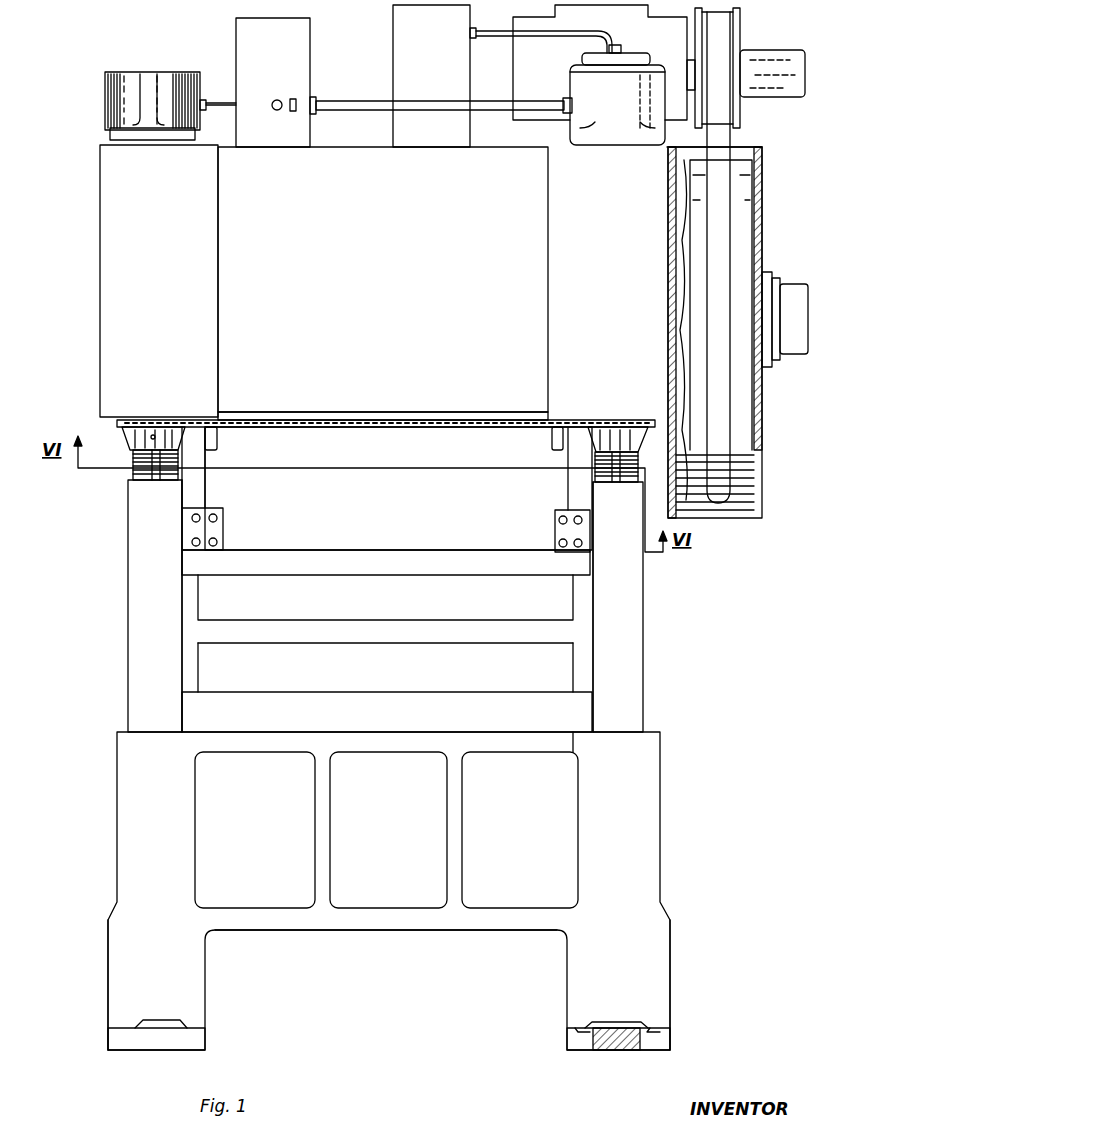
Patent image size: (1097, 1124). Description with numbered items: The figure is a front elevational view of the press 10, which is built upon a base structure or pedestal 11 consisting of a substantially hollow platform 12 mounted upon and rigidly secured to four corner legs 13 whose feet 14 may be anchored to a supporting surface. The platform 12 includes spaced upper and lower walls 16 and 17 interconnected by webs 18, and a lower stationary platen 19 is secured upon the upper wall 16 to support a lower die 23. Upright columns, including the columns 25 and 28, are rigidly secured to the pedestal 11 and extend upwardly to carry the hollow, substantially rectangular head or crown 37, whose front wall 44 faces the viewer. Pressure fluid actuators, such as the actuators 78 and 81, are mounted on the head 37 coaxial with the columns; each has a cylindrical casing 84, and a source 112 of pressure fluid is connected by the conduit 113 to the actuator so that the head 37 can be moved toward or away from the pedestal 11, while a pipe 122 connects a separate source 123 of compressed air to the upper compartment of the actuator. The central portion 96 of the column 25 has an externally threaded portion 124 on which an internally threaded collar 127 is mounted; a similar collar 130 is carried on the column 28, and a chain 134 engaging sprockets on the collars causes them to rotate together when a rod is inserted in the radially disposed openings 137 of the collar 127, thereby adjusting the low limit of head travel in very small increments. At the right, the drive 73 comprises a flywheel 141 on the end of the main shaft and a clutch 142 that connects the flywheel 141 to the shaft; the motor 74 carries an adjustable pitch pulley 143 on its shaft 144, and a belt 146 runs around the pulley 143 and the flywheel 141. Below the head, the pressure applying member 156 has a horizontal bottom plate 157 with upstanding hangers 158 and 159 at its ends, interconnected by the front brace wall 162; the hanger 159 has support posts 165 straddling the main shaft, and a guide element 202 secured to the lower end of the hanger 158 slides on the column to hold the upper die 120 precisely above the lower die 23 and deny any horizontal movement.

The press 10 is at (677, 762).
The base structure or pedestal 11 is at (115, 790).
The platform 12 is at (468, 935).
The corner legs 13 is at (112, 968).
The feet 14 is at (200, 1037).
The upper wall 16 is at (415, 748).
The lower wall 17 is at (398, 894).
The webs 18 is at (457, 802).
The lower stationary platen 19 is at (398, 690).
The lower die 23 is at (527, 668).
The upright column 25 is at (645, 694).
The upright column 28 is at (126, 658).
The head or crown 37 is at (98, 240).
The front wall 44 is at (383, 283).
The drive 73 is at (738, 136).
The motor 74 is at (512, 72).
The pressure fluid actuator 78 is at (568, 82).
The pressure fluid actuator 81 is at (102, 92).
The cylindrical casing 84 is at (612, 122).
The central portion 96 is at (625, 637).
The source of pressure fluid 112 is at (304, 40).
The conduit 113 is at (470, 110).
The upper die 120 is at (376, 618).
The pipe 122 is at (590, 31).
The source of pressure fluid 123 is at (392, 56).
The externally threaded portion 124 is at (605, 472).
The internally threaded collar 127 is at (640, 426).
The collar 130 is at (150, 426).
The chain 134 is at (410, 428).
The radially disposed openings 137 is at (598, 430).
The flywheel 141 is at (745, 193).
The clutch 142 is at (785, 297).
The adjustable pitch pulley 143 is at (737, 26).
The shaft 144 is at (686, 70).
The belt 146 is at (720, 166).
The pressure applying member 156 is at (180, 560).
The bottom plate 157 is at (385, 573).
The hanger 158 is at (205, 478).
The hanger 159 is at (568, 494).
The front brace wall 162 is at (398, 488).
The support post 165 is at (565, 455).
The guide element 202 is at (190, 530).